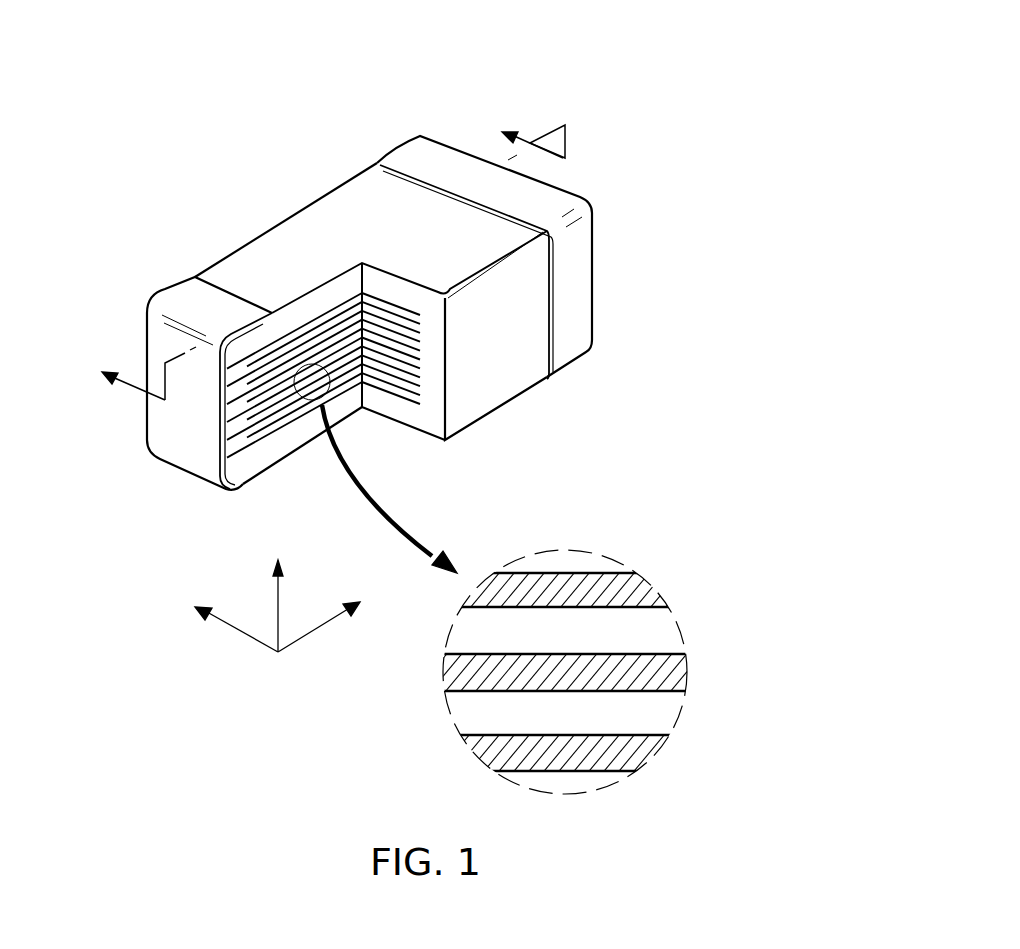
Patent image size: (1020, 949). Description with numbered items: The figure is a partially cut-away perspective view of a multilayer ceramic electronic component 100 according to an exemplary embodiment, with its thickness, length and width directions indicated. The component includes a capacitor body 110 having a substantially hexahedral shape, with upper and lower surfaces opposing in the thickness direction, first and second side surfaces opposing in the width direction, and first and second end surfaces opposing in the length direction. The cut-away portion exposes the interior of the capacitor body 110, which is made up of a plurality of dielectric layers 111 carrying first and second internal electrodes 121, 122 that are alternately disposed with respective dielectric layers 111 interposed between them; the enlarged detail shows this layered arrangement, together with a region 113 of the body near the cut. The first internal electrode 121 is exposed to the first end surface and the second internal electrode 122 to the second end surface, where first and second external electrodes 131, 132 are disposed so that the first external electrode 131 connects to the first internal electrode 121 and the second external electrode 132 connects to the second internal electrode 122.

The multilayer ceramic electronic component 100 is at (398, 38).
The capacitor body 110 is at (243, 224).
The dielectric layers 111 is at (650, 628).
The margin portion 113 is at (290, 437).
The first internal electrode 121 is at (637, 596).
The second internal electrode 122 is at (652, 675).
The first external electrode 131 is at (184, 302).
The second external electrode 132 is at (443, 162).